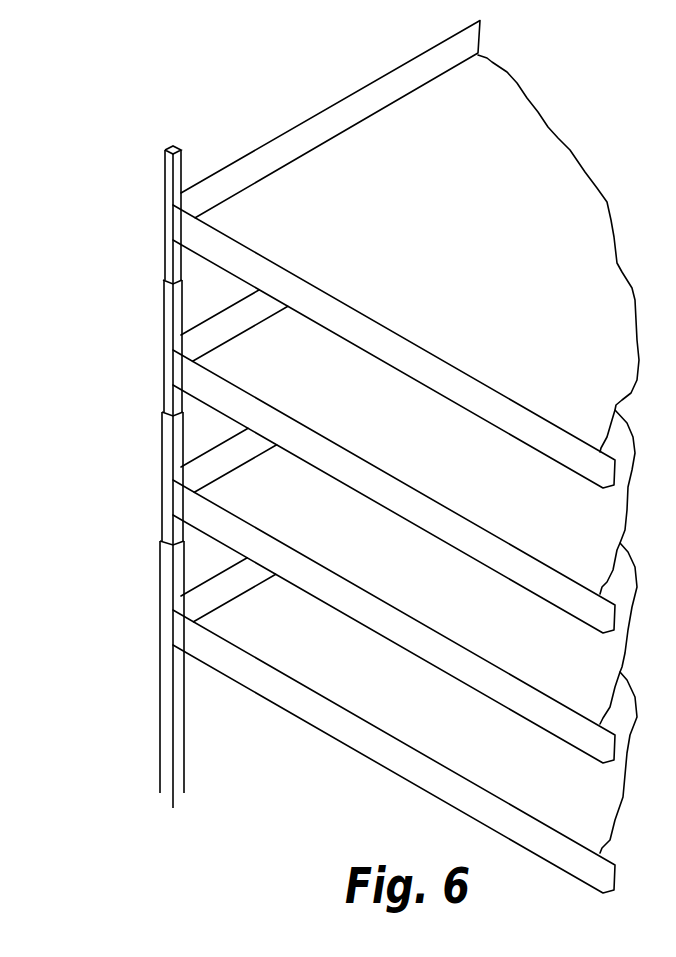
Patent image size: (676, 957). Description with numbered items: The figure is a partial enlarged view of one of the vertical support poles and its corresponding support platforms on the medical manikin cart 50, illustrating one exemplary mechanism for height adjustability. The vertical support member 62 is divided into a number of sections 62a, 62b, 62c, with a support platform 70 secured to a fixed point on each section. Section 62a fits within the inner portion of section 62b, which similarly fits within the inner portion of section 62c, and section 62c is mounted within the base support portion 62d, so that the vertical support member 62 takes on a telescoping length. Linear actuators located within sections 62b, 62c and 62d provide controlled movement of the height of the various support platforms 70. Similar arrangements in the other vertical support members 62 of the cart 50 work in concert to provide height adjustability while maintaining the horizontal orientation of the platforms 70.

The cart 50 is at (266, 92).
The vertical support member 62 is at (103, 148).
The section 62a is at (163, 252).
The section 62b is at (163, 316).
The section 62c is at (162, 450).
The base support portion 62d is at (158, 688).
The support platform 70 is at (387, 251).